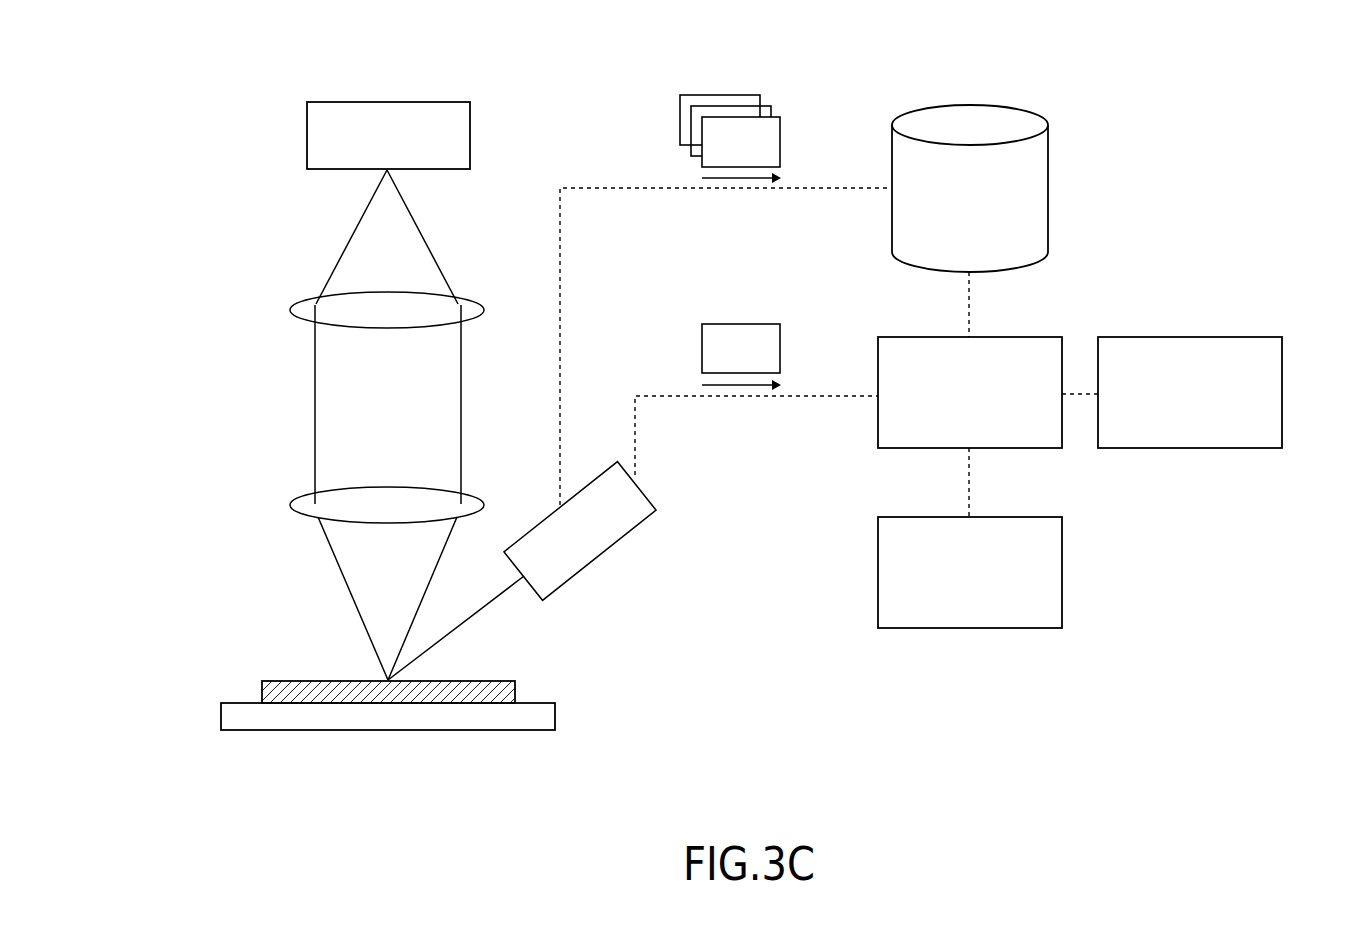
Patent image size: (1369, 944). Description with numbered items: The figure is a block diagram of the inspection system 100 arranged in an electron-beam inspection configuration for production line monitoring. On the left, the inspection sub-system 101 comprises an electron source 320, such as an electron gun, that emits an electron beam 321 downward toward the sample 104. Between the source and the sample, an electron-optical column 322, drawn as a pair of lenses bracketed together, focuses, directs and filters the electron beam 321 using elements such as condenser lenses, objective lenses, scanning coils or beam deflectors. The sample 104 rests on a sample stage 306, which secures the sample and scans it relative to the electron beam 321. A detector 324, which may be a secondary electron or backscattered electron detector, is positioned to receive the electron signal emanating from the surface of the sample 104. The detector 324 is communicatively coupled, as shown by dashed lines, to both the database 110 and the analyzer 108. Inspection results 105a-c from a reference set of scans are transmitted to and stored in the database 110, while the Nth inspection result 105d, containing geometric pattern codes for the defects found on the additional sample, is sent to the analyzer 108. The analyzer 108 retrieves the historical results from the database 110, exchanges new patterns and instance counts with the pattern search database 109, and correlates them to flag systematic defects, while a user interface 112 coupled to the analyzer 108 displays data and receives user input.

The inspection system 100 is at (238, 100).
The inspection sub-system 101 is at (517, 126).
The electron source 320 is at (407, 145).
The electron beam 321 is at (387, 237).
The electron-optical column 322 is at (295, 273).
The detector 324 is at (522, 571).
The sample 104 is at (515, 684).
The sample stage 306 is at (555, 712).
The inspection results 105a-c is at (775, 151).
The Nth inspection result 105d is at (767, 361).
The database 110 is at (988, 215).
The analyzer 108 is at (920, 364).
The pattern search database 109 is at (1140, 364).
The user interface 112 is at (920, 544).